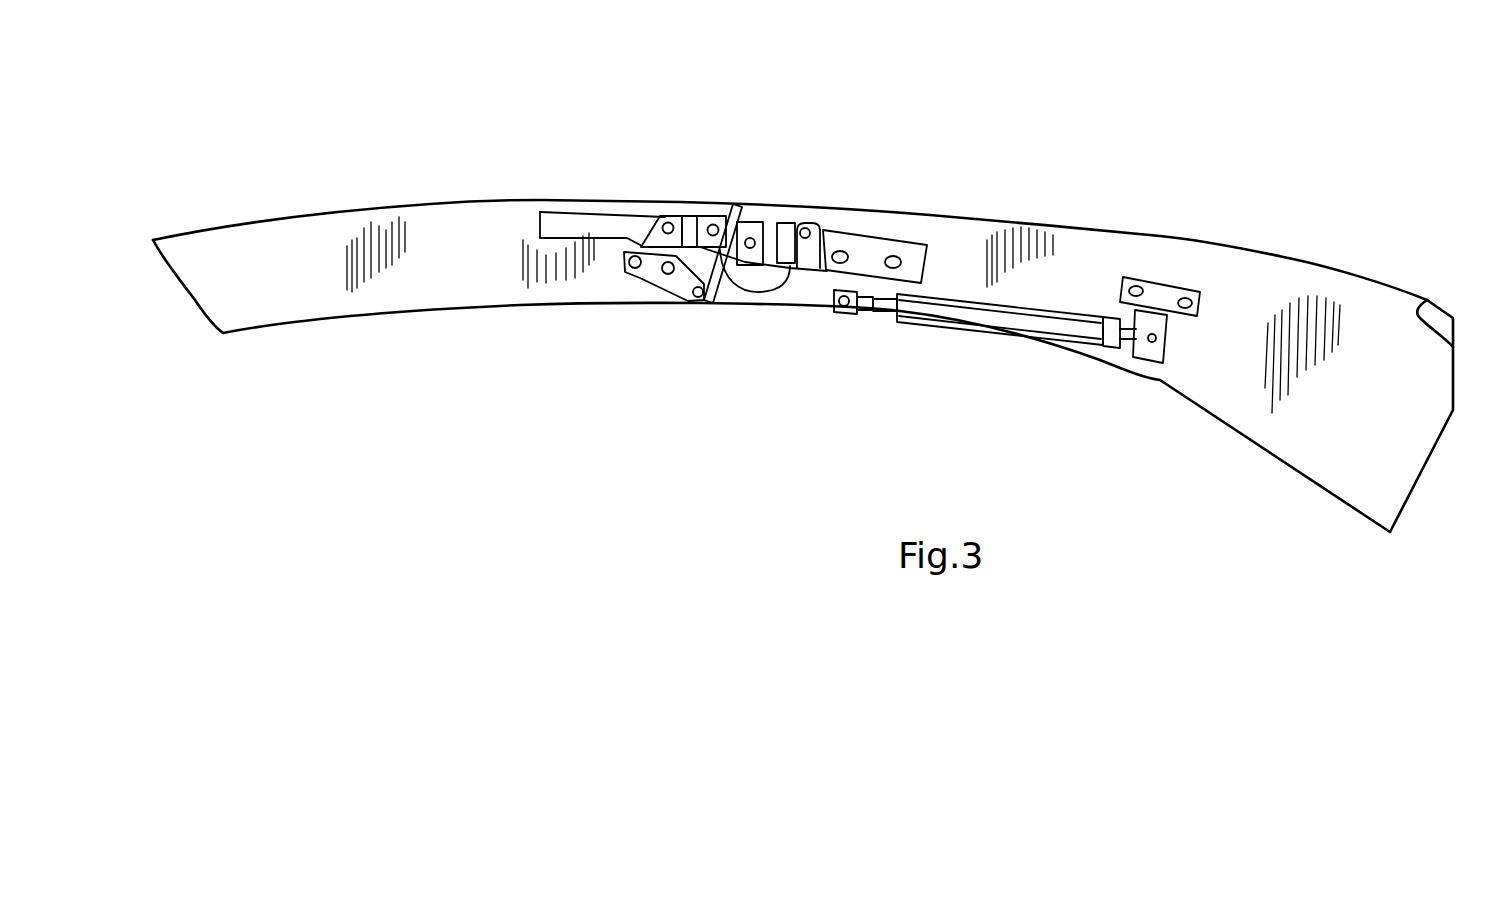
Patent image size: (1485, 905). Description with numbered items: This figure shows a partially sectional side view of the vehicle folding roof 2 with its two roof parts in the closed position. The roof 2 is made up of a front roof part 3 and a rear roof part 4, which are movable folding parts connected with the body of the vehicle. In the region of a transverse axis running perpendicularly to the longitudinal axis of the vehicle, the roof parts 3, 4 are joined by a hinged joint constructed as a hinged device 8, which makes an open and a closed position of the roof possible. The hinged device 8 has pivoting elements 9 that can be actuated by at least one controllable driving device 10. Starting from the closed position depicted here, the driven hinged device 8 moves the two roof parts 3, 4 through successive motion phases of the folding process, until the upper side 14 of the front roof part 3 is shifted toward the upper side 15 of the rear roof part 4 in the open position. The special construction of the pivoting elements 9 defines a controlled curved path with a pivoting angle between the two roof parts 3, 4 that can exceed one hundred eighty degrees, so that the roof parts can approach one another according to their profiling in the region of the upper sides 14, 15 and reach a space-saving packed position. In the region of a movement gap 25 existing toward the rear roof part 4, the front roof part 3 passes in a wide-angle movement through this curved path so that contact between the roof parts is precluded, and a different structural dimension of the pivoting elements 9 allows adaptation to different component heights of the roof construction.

The roof 2 is at (931, 72).
The front roof part 3 is at (329, 211).
The rear roof part 4 is at (1323, 263).
The hinged device 8 is at (1130, 402).
The pivoting elements 9 is at (672, 318).
The controllable driving device 10 is at (1055, 300).
The upper side of the front roof part 14 is at (541, 199).
The upper side of the rear roof part 15 is at (977, 218).
The movement gap 25 is at (730, 205).